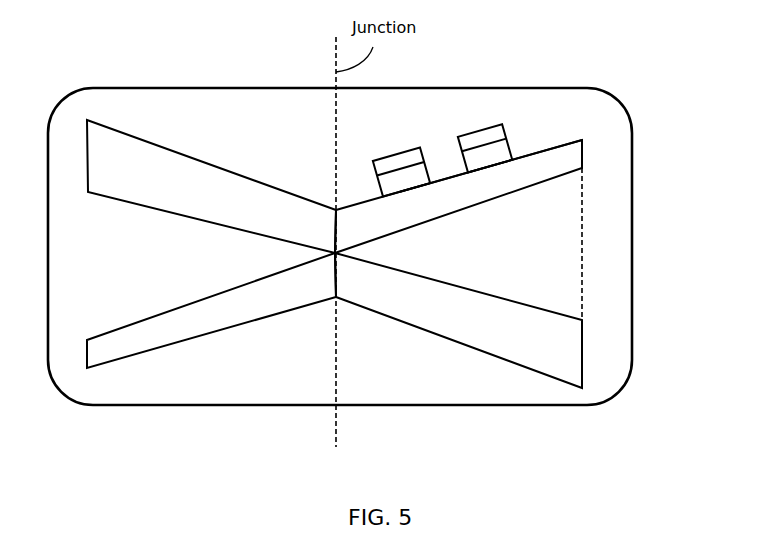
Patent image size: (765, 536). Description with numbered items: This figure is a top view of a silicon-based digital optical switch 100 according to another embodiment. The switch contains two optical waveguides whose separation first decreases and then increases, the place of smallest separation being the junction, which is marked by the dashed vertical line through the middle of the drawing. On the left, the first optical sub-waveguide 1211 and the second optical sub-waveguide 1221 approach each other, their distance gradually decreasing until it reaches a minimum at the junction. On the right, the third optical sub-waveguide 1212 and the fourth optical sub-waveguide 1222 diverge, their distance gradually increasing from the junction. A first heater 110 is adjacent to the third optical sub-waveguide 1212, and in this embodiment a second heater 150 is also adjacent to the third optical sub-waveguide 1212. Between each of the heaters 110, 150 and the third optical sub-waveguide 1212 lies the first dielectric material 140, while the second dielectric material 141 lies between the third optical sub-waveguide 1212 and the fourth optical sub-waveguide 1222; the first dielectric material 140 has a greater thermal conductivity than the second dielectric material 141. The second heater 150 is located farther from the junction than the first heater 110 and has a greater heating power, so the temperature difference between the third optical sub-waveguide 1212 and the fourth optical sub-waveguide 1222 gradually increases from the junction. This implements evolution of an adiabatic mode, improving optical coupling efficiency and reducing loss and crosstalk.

The silicon-based digital optical switch 100 is at (92, 88).
The first heater 110 is at (393, 156).
The second heater 150 is at (475, 129).
The first dielectric material 140 is at (518, 156).
The second dielectric material 141 is at (557, 223).
The first optical sub-waveguide 1211 is at (167, 165).
The third optical sub-waveguide 1212 is at (573, 155).
The second optical sub-waveguide 1221 is at (153, 337).
The fourth optical sub-waveguide 1222 is at (565, 357).